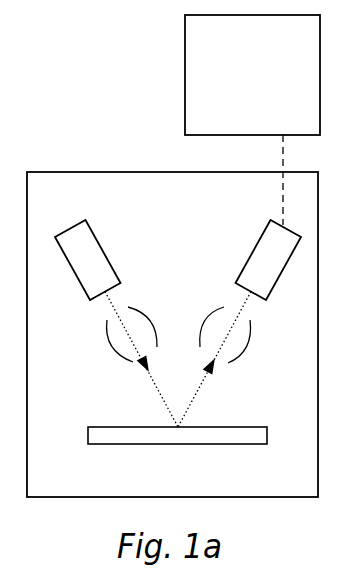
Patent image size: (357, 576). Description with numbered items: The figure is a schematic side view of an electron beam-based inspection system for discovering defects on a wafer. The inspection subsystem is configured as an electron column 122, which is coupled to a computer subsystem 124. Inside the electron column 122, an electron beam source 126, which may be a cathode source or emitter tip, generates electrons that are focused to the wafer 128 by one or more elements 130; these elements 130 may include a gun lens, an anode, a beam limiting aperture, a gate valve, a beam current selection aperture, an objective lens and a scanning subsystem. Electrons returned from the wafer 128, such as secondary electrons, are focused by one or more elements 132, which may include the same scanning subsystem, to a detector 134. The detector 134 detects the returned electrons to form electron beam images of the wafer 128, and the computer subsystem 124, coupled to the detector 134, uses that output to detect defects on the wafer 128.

The electron column 122 is at (160, 172).
The computer subsystem 124 is at (233, 116).
The electron beam source 126 is at (92, 228).
The wafer 128 is at (222, 427).
The one or more elements 130 is at (117, 352).
The one or more elements 132 is at (238, 358).
The detector 134 is at (263, 233).